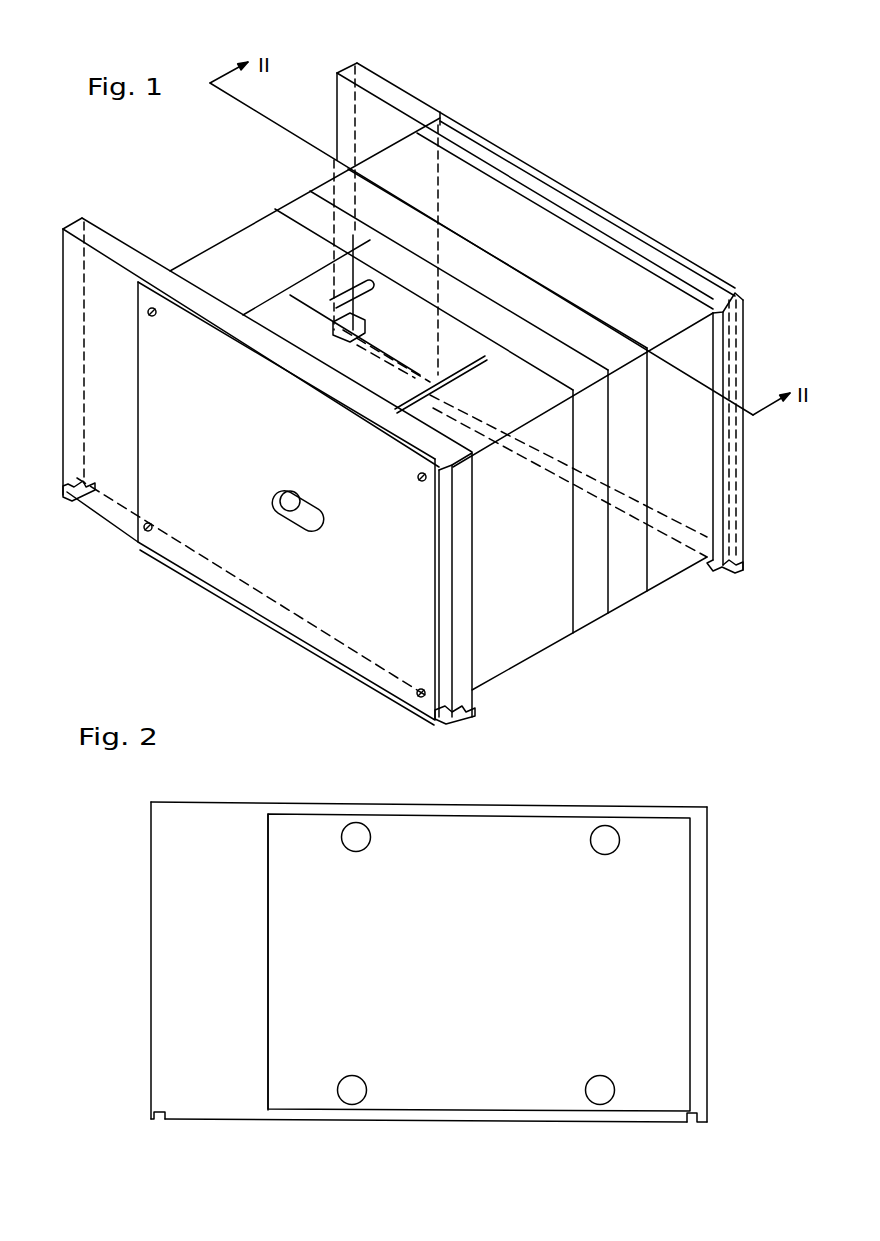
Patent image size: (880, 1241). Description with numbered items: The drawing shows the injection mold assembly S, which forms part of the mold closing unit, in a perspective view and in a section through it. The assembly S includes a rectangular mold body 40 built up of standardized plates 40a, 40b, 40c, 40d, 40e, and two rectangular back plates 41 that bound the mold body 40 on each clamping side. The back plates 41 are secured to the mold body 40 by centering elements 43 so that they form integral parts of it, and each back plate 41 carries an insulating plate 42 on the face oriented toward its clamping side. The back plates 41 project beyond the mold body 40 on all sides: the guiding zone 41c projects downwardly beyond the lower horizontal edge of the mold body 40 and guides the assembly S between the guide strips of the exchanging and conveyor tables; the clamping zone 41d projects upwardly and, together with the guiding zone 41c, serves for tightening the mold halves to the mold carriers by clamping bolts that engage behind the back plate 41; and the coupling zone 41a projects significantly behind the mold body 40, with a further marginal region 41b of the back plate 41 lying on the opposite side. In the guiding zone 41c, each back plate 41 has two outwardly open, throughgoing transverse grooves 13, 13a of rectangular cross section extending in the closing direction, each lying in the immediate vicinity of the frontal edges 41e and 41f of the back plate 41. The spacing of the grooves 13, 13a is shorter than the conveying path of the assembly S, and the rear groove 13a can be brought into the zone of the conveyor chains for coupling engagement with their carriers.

In FIG. 1, the transverse groove 13 is at (440, 718).
In FIG. 2, the transverse groove 13 is at (689, 1124).
In FIG. 1, the rear transverse groove 13a is at (72, 502).
In FIG. 2, the rear transverse groove 13a is at (161, 1123).
In FIG. 1, the mold body 40 is at (594, 635).
In FIG. 1, the plate 40a is at (620, 297).
In FIG. 2, the plate 40a is at (629, 903).
In FIG. 1, the plate 40b is at (567, 320).
In FIG. 1, the plate 40c is at (513, 328).
In FIG. 1, the bottom plate 40d is at (532, 397).
In FIG. 1, the front plate 40e is at (303, 327).
In FIG. 1, the back plate 41 is at (385, 70).
In FIG. 1, the coupling zone 41a is at (98, 288).
In FIG. 2, the coupling zone 41a is at (212, 855).
In FIG. 1, the rear right post 41b is at (716, 367).
In FIG. 2, the guiding zone 41c is at (461, 1118).
In FIG. 2, the clamping zone 41d is at (554, 814).
In FIG. 1, the frontal edge 41e is at (337, 103).
In FIG. 2, the frontal edge 41e is at (151, 894).
In FIG. 1, the frontal edge 41f is at (457, 667).
In FIG. 2, the frontal edge 41f is at (708, 919).
In FIG. 1, the insulating plate 42 is at (443, 178).
In FIG. 2, the centering element 43 is at (352, 838).
In FIG. 1, the injection mold assembly S is at (656, 606).